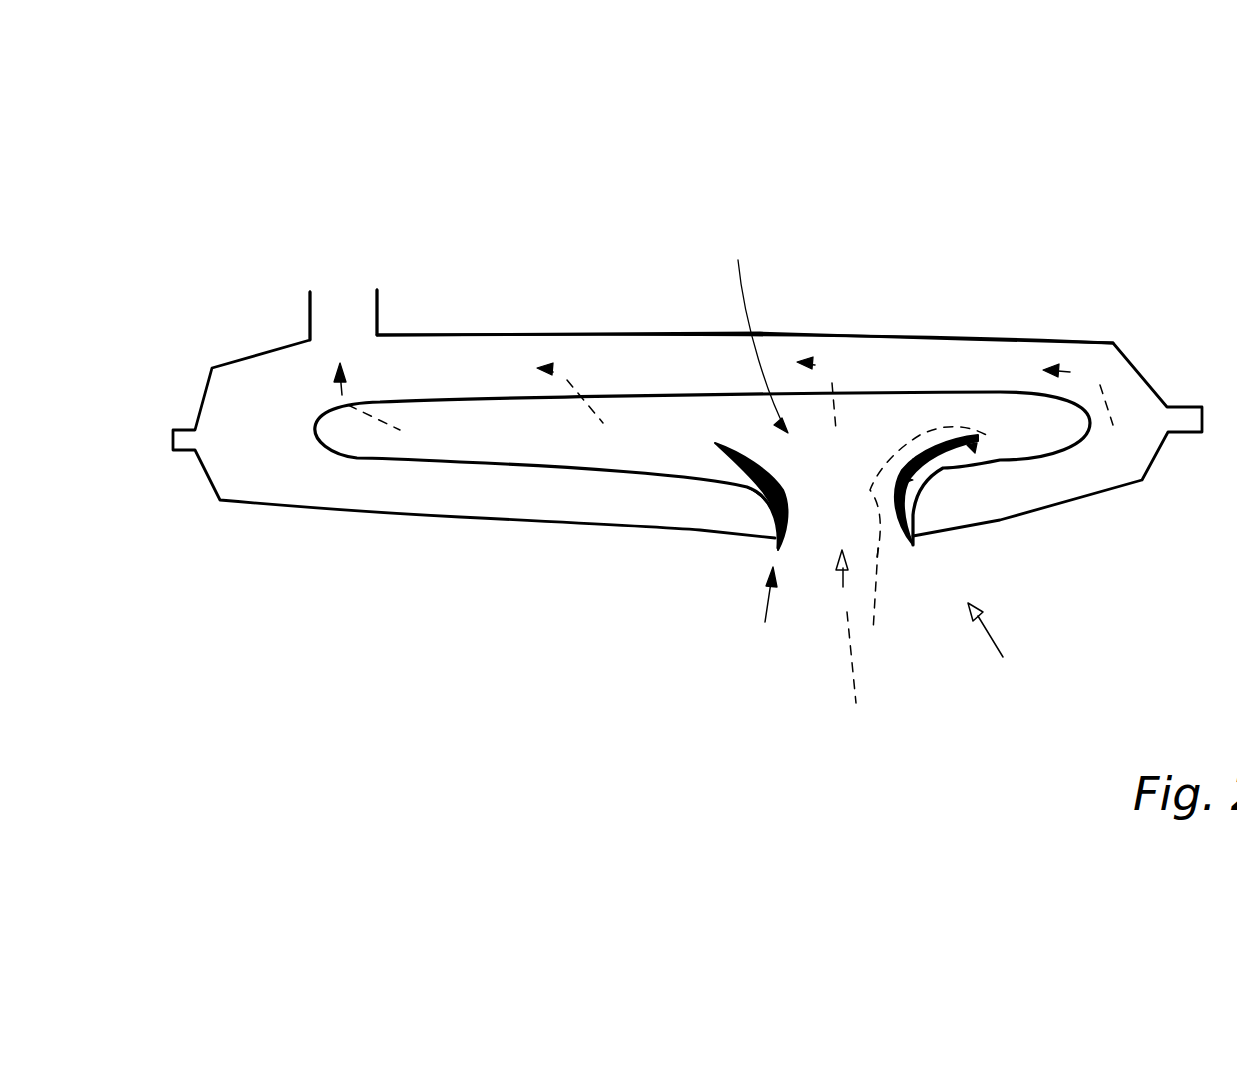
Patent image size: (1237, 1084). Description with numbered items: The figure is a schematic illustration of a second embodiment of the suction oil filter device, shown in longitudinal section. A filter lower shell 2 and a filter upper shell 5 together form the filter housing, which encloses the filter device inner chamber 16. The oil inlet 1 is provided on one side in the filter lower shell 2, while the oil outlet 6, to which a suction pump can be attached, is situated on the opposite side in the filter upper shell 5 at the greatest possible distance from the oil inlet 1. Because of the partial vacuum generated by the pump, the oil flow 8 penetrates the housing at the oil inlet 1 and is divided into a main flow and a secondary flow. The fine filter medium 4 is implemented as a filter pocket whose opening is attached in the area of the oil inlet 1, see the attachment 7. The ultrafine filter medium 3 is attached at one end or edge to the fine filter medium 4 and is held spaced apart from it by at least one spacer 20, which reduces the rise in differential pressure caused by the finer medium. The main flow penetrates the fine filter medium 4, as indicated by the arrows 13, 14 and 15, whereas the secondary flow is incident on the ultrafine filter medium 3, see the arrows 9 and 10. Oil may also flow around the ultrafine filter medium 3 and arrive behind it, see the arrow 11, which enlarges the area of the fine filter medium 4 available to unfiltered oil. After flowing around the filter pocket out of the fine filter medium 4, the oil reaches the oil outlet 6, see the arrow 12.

The oil inlet 1 is at (997, 646).
The filter lower shell 2 is at (315, 508).
The ultrafine filter medium 3 is at (717, 448).
The fine filter medium 4 is at (530, 465).
The filter upper shell 5 is at (523, 330).
The oil outlet 6 is at (377, 292).
The pocket opening attachment 7 is at (761, 618).
The oil flow 8 is at (850, 660).
The secondary flow arrow 9 is at (873, 623).
The secondary flow arrow 10 is at (888, 468).
The bypass flow arrow 11 is at (948, 423).
The outlet flow arrow 12 is at (1098, 384).
The main flow arrow 13 is at (832, 378).
The main flow arrow 14 is at (567, 380).
The main flow arrow 15 is at (342, 395).
The filter device inner chamber 16 is at (753, 317).
The spacer 20 is at (743, 470).